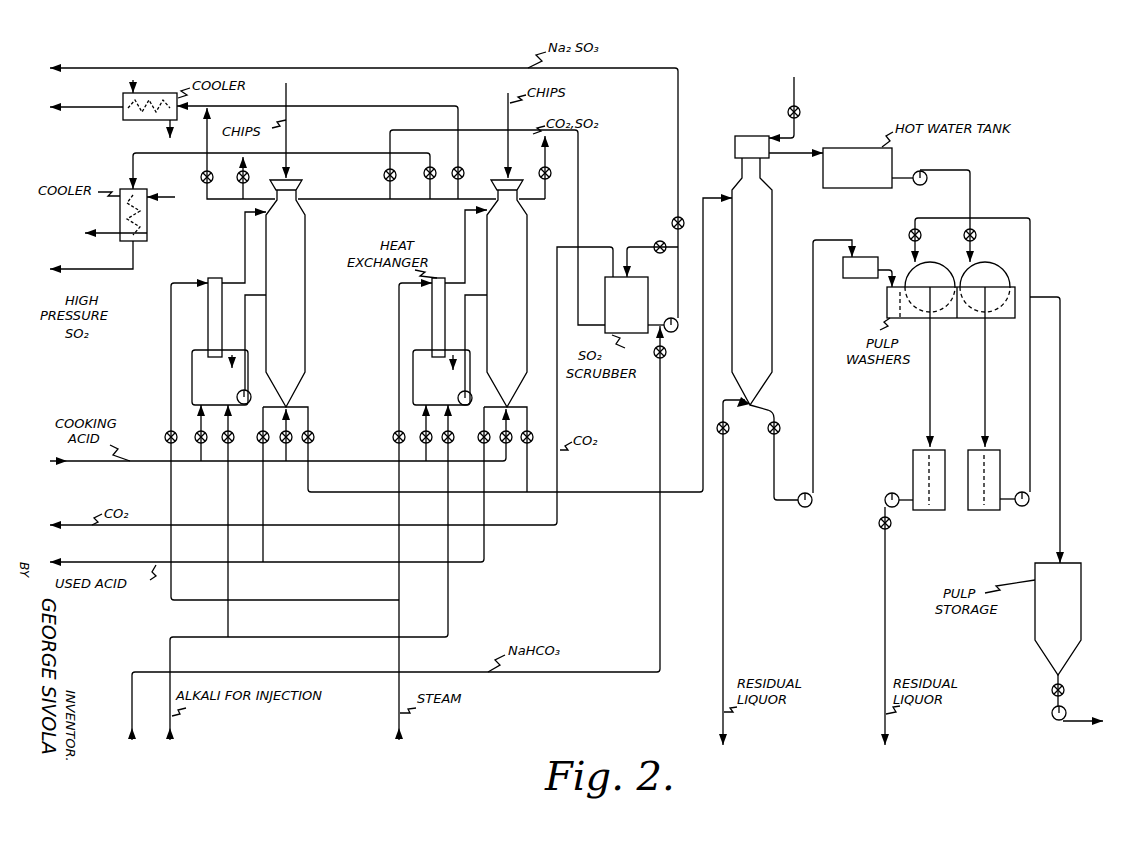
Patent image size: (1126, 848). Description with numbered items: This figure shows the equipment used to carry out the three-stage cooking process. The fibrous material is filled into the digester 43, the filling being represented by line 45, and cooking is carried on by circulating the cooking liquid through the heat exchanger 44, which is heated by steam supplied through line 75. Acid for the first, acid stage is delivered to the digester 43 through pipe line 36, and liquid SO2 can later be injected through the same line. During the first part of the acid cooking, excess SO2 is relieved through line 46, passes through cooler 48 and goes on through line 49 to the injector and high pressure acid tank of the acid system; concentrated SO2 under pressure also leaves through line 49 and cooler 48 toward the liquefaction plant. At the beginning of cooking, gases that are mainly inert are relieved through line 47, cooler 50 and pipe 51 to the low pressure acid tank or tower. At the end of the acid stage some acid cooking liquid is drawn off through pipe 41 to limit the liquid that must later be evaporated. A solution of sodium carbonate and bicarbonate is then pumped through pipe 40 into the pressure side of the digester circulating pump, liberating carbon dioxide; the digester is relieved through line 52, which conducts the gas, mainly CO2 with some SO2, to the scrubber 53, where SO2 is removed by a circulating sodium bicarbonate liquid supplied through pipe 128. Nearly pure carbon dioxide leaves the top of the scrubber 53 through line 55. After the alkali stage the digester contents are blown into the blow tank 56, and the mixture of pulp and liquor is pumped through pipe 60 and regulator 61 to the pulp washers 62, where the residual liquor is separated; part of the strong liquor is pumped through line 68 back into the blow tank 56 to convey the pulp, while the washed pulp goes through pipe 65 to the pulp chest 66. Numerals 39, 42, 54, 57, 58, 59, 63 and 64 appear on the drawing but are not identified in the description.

The pipe line 36 is at (106, 464).
The heat exchanger return line 39 is at (201, 418).
The pipe 40 is at (228, 487).
The pipe 41 is at (263, 505).
The digester discharge line to blow tank 42 is at (309, 416).
The digester 43 is at (306, 296).
The heat exchanger 44 is at (208, 316).
The line 45 is at (288, 130).
The line 46 is at (247, 160).
The line 47 is at (471, 150).
The cooler 48 is at (148, 220).
The line 49 is at (80, 268).
The cooler 50 is at (128, 121).
The pipe 51 is at (82, 96).
The line 52 is at (354, 199).
The scrubber 53 is at (648, 316).
The Na2SO3 line 54 is at (84, 62).
The line 55 is at (100, 527).
The blow tank 56 is at (775, 236).
The blow tank head 57 is at (753, 130).
The blow tank inlet line 58 is at (794, 86).
The hot water tank 59 is at (848, 152).
The pipe 60 is at (816, 383).
The regulator 61 is at (866, 262).
The pulp washers 62 is at (965, 320).
The wash liquor tank 63 is at (992, 514).
The wash liquor tank 64 is at (940, 514).
The pipe 65 is at (1060, 460).
The pulp chest 66 is at (1072, 608).
The line 68 is at (724, 724).
The steam line 75 is at (171, 340).
The pipe 128 is at (132, 713).